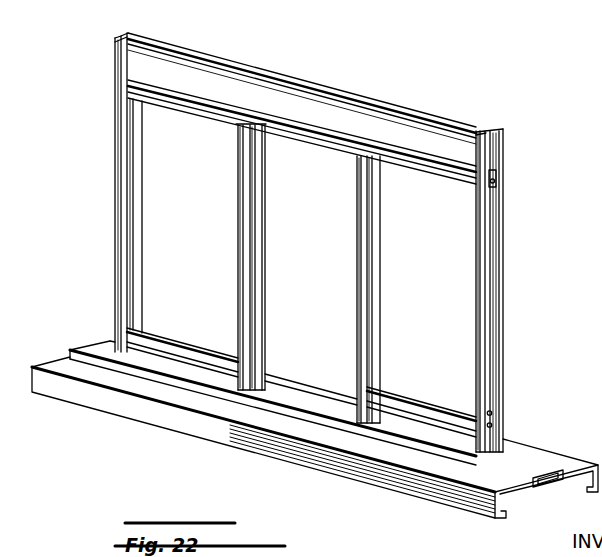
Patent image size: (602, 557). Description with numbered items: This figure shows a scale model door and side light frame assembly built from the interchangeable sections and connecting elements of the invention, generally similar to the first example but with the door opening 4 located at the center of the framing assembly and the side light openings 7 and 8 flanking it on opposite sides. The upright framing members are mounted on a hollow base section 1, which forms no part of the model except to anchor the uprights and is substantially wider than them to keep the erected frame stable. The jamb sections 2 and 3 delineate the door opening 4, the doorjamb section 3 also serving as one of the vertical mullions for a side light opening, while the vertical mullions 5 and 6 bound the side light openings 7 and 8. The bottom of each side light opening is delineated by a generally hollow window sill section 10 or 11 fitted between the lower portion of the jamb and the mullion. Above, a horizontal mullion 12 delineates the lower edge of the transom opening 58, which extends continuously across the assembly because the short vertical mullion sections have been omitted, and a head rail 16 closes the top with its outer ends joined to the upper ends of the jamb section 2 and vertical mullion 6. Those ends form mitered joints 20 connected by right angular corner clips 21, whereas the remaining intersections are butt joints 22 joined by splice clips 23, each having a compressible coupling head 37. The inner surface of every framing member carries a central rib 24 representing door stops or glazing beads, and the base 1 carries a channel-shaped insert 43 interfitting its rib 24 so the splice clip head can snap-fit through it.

The base section 1 is at (165, 407).
The jamb section 2 is at (118, 230).
The jamb section 3 is at (263, 258).
The door opening 4 is at (332, 321).
The vertical mullion 5 is at (380, 291).
The vertical mullion 6 is at (503, 305).
The side light opening 7 is at (175, 192).
The side light opening 8 is at (453, 257).
The window sill section 10 is at (175, 345).
The window sill section 11 is at (416, 409).
The horizontal mullion 12 is at (333, 147).
The head rail 16 is at (240, 62).
The mitered joint 20 is at (117, 42).
The right angular corner clip 21 is at (150, 36).
The butt joint 22 is at (240, 132).
The splice clip 23 is at (490, 437).
The central rib 24 is at (345, 133).
The compressible coupling head 37 is at (496, 188).
The channel-shaped insert 43 is at (541, 488).
The transom opening 58 is at (325, 113).